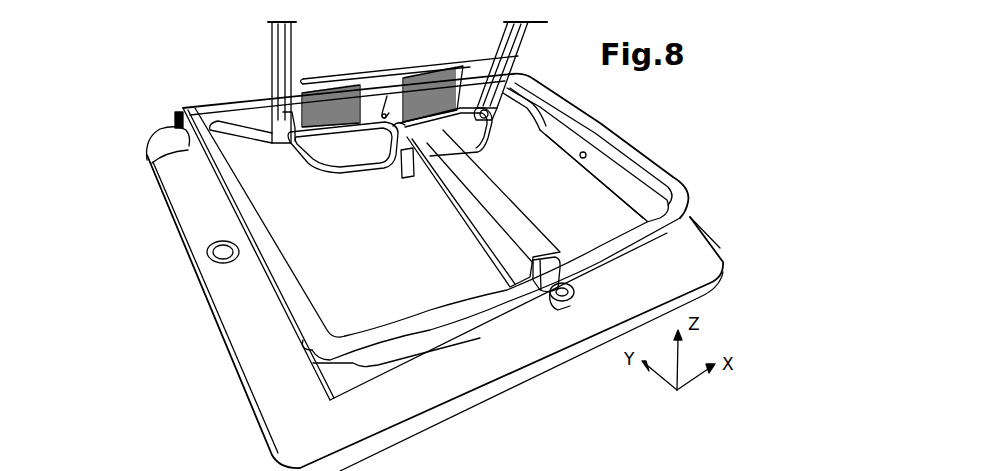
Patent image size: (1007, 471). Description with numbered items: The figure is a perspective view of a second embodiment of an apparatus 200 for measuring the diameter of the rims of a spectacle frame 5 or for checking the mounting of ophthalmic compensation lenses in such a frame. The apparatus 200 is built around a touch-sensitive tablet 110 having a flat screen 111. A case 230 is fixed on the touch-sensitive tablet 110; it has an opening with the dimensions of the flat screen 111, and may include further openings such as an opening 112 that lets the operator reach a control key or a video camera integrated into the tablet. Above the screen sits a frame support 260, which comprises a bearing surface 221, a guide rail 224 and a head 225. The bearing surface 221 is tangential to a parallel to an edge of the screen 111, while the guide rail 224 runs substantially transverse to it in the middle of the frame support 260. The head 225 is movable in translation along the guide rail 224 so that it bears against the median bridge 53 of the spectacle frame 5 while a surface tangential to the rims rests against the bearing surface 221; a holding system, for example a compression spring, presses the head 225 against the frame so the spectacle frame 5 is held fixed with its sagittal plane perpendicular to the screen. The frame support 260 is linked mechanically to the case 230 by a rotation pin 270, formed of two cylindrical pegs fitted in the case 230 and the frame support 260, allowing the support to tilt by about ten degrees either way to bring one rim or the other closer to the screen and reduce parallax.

The spectacle frame 5 is at (273, 70).
The median bridge 53 is at (393, 118).
The touch-sensitive tablet 110 is at (163, 137).
The flat screen 111 is at (625, 187).
The opening 112 is at (225, 252).
The apparatus 200 is at (395, 276).
The bearing surface 221 is at (470, 97).
The guide rail 224 is at (577, 268).
The head 225 is at (436, 143).
The case 230 is at (233, 295).
The frame support 260 is at (399, 318).
The rotation pin 270 is at (386, 104).